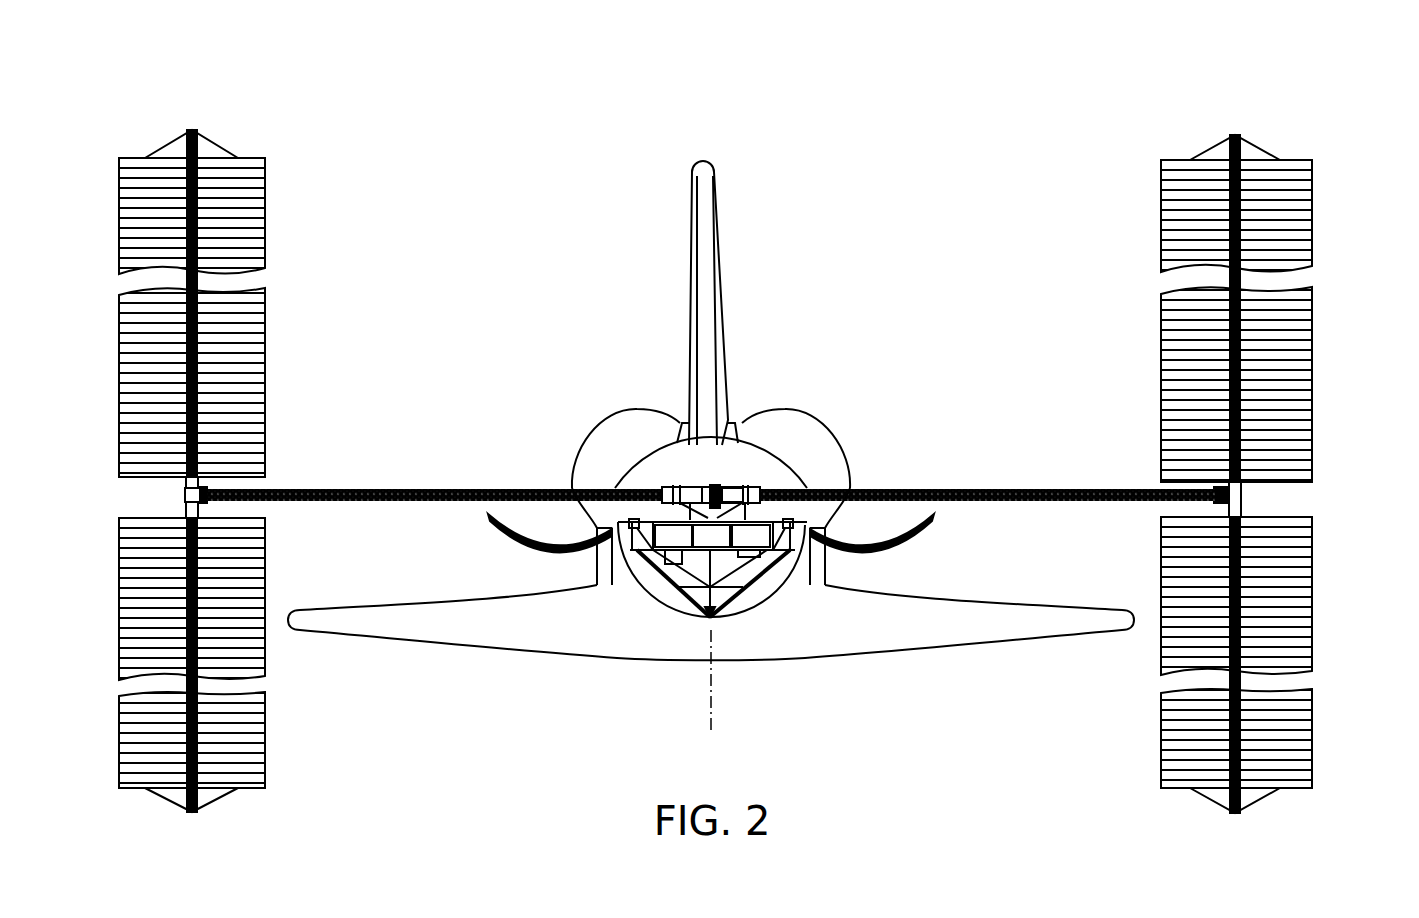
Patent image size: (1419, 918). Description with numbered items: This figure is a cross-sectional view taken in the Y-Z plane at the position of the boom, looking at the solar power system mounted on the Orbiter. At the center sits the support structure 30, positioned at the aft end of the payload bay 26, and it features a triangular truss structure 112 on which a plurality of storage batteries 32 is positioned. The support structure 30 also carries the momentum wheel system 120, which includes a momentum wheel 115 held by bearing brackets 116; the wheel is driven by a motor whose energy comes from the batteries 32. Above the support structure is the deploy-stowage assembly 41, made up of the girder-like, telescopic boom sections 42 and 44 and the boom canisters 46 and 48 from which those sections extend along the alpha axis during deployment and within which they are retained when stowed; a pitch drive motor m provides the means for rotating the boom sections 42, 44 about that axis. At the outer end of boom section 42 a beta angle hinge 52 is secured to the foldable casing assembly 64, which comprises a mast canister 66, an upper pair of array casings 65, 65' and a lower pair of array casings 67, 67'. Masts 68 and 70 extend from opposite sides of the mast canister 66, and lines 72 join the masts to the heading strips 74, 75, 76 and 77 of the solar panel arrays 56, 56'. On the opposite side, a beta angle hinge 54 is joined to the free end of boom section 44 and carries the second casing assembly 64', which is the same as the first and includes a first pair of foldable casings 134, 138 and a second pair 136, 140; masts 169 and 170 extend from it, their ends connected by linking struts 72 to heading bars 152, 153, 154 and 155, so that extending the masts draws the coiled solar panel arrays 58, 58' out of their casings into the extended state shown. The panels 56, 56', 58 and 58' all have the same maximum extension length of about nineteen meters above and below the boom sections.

The payload bay 26 is at (660, 593).
The support structure 30 is at (745, 604).
The storage batteries 32 is at (788, 556).
The deploy-stowage assembly 41 is at (760, 478).
The boom section 42 is at (306, 487).
The boom section 44 is at (1002, 488).
The boom canister 46 is at (750, 480).
The boom canister 48 is at (690, 488).
The beta angle hinge 52 is at (205, 497).
The beta angle hinge 54 is at (1218, 487).
The solar panel array 56 is at (241, 382).
The solar panel array 56' is at (238, 740).
The solar panel array 58 is at (1268, 384).
The solar panel array 58' is at (1261, 596).
The foldable casing assembly 64 is at (135, 499).
The casing assembly 64' is at (1316, 487).
The array casing 65 is at (105, 442).
The array casing 65' is at (279, 441).
The mast canister 66 is at (183, 493).
The array casing 67 is at (170, 598).
The array casing 67' is at (289, 545).
The mast 68 is at (197, 207).
The mast 70 is at (200, 740).
The lines (linking struts) 72 is at (172, 143).
The heading strip 74 is at (262, 788).
The heading strip 75 is at (135, 789).
The heading strip 76 is at (255, 158).
The heading strip 77 is at (132, 157).
The pitch drive motor m is at (717, 480).
The triangular truss structure 112 is at (757, 562).
The momentum wheel 115 is at (667, 568).
The bearing brackets 116 is at (683, 595).
The momentum wheel system 120 is at (657, 558).
The foldable casing 134 is at (1308, 482).
The foldable casing 136 is at (1300, 515).
The foldable casing 138 is at (1162, 482).
The foldable casing 140 is at (1165, 516).
The heading bar 152 is at (1298, 793).
The heading bar (cap) 153 is at (1167, 793).
The heading bar 154 is at (1300, 160).
The heading bar 155 is at (1170, 160).
The mast 169 is at (1225, 220).
The mast 170 is at (1238, 737).